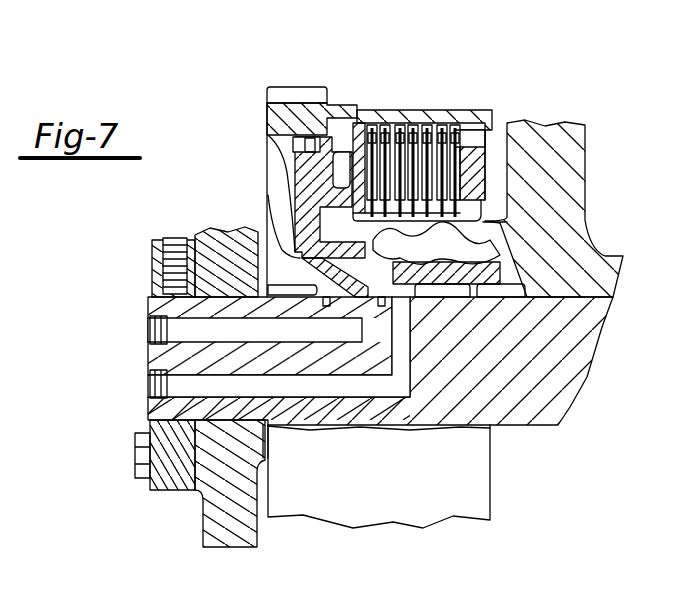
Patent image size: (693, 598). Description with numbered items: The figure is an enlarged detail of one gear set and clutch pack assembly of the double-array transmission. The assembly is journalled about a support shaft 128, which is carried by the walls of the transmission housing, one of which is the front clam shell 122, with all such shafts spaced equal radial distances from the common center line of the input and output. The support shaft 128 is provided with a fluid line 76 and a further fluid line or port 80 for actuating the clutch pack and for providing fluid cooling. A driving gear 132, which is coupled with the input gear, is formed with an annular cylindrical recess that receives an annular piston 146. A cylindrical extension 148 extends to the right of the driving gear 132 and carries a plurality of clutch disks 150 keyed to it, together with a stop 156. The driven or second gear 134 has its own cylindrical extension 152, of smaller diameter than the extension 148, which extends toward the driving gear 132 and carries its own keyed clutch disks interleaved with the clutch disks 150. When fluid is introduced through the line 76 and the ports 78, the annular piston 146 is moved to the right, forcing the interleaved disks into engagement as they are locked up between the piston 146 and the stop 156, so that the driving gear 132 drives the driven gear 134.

The fluid line 76 is at (182, 327).
The ports 78 is at (267, 193).
The fluid port 80 is at (183, 388).
The front clam shell 122 is at (212, 240).
The support shaft 128 is at (563, 353).
The driving gear 132 is at (303, 97).
The driven gear 134 is at (538, 132).
The annular piston 146 is at (267, 105).
The cylindrical extension 148 is at (357, 110).
The clutch disks 150 is at (427, 120).
The cylindrical extension 152 is at (380, 247).
The stop 156 is at (483, 163).